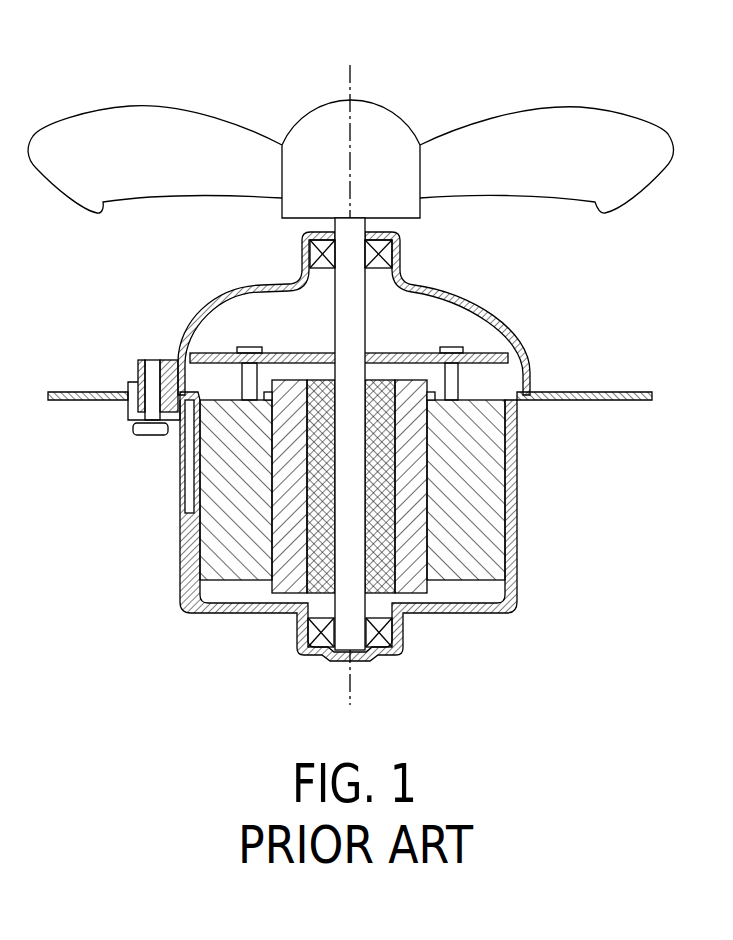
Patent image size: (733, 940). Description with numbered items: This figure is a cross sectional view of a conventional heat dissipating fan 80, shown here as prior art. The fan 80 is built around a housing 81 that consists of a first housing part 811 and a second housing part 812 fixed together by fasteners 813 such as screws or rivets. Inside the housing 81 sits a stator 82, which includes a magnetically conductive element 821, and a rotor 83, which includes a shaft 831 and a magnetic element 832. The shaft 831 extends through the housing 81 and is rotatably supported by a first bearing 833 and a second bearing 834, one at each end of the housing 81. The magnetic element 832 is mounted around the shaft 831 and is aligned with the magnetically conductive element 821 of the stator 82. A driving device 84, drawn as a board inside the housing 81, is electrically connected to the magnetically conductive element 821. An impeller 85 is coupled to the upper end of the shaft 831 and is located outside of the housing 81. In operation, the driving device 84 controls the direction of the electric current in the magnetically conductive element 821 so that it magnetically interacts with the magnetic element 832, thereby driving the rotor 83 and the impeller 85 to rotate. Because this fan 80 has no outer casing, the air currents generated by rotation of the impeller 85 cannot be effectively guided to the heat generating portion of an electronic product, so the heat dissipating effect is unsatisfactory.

The heat dissipating fan 80 is at (357, 117).
The impeller 85 is at (528, 117).
The housing 81 is at (350, 446).
The first housing part 811 is at (525, 343).
The second housing part 812 is at (356, 526).
The fasteners 813 is at (153, 382).
The stator 82 is at (212, 391).
The magnetically conductive element 821 is at (200, 482).
The rotor 83 is at (337, 443).
The shaft 831 is at (357, 298).
The magnetic element 832 is at (412, 590).
The first bearing 833 is at (318, 253).
The second bearing 834 is at (305, 628).
The driving device 84 is at (472, 352).